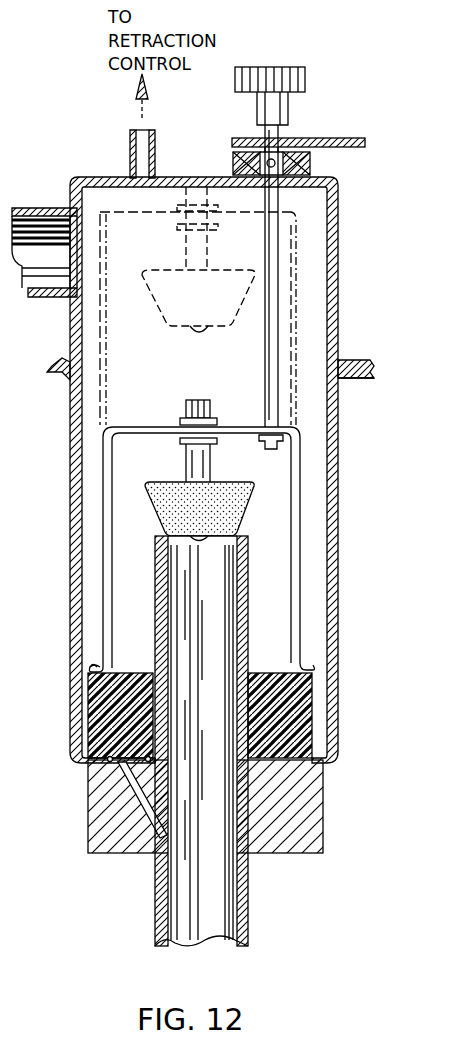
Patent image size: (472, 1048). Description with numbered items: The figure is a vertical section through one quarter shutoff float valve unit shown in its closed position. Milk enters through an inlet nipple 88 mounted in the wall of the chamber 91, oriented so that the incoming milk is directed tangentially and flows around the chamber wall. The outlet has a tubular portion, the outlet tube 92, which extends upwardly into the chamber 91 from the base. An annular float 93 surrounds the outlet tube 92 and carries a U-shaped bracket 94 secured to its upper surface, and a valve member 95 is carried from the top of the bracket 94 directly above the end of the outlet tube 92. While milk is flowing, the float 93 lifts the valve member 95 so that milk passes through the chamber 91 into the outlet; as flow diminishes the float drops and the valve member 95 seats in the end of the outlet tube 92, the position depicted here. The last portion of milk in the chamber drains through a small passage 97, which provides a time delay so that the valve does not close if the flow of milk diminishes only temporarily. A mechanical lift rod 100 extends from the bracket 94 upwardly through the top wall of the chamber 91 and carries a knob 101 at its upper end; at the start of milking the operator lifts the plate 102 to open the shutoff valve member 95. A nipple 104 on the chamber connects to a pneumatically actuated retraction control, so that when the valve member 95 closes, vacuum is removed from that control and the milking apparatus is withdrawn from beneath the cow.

The inlet nipple 88 is at (30, 207).
The chamber 91 is at (70, 425).
The outlet tube 92 is at (162, 605).
The annular float 93 is at (96, 760).
The U-shaped bracket 94 is at (104, 556).
The valve member 95 is at (226, 490).
The small passage 97 is at (143, 823).
The mechanical lift rod 100 is at (272, 288).
The knob 101 is at (262, 78).
The plate 102 is at (366, 108).
The nipple 104 is at (130, 140).